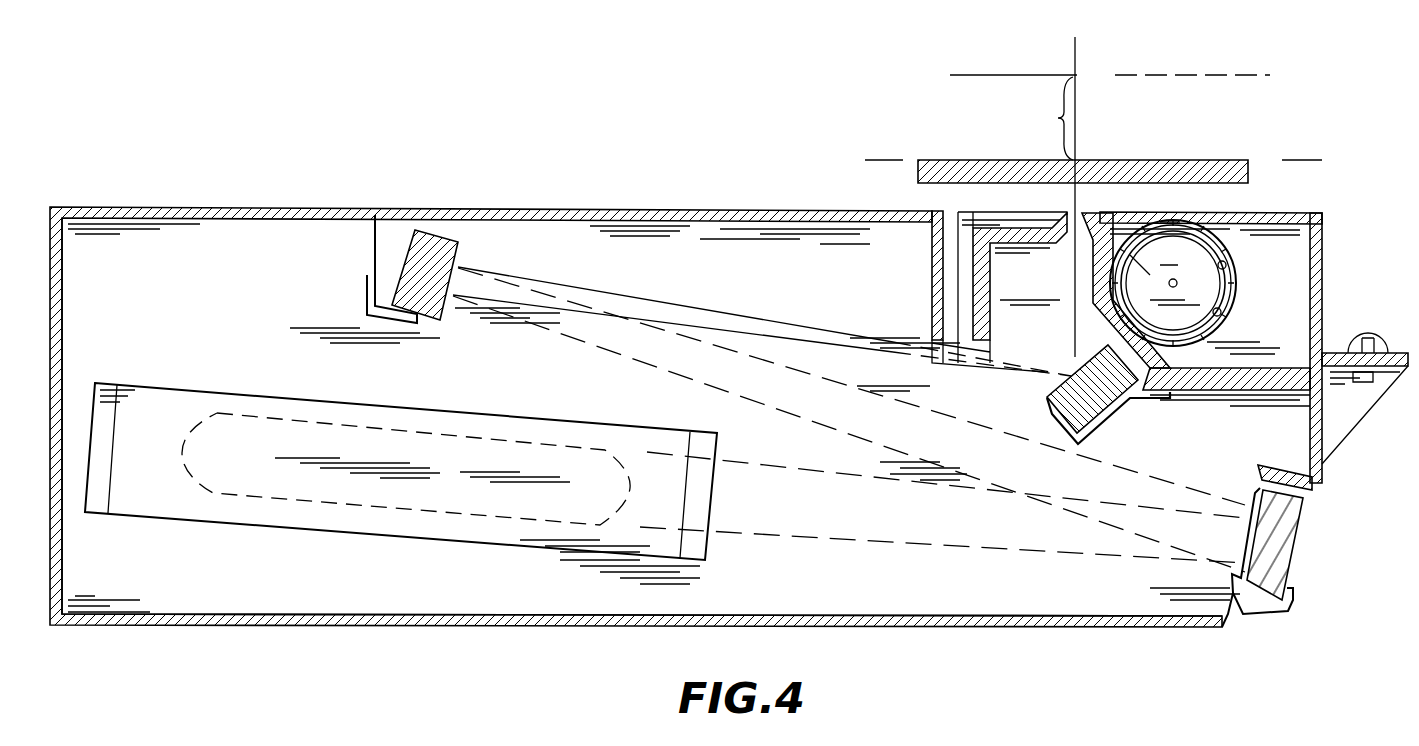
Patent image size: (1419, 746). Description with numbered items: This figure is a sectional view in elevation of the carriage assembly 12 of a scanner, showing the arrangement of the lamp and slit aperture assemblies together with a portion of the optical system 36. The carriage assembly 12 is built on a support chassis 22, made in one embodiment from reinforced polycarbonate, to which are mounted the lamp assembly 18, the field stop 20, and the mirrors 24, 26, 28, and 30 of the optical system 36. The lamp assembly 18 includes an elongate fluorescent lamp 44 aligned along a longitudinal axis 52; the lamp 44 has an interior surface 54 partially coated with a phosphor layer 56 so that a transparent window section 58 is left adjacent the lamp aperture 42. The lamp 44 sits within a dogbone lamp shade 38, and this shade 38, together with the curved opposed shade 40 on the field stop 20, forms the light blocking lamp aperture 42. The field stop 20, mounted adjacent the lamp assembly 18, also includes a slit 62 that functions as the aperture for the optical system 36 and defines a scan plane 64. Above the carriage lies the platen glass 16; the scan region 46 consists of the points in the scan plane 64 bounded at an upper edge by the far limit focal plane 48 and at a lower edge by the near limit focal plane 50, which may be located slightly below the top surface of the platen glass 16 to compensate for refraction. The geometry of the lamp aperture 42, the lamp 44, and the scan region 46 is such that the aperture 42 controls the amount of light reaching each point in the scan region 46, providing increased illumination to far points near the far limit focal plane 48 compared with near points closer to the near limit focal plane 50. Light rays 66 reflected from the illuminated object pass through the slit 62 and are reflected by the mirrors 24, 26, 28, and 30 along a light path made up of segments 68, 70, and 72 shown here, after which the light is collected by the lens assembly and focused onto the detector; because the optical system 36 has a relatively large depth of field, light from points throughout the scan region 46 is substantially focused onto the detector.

The carriage assembly 12 is at (266, 115).
The platen glass 16 is at (1162, 159).
The lamp assembly 18 is at (1330, 272).
The field stop assembly 20 is at (955, 208).
The support chassis 22 is at (315, 207).
The mirror 24 is at (1047, 398).
The mirror 26 is at (462, 262).
The mirror 28 is at (1305, 548).
The mirror 30 is at (328, 397).
The optical system 36 is at (430, 553).
The lamp shade 38 is at (1322, 213).
The opposed shade 40 is at (1097, 213).
The lamp aperture 42 is at (1188, 213).
The lamp 44 is at (1215, 350).
The scan region 46 is at (1045, 118).
The far limit focal plane 48 is at (1270, 75).
The near limit focal plane 50 is at (1290, 160).
The longitudinal axis 52 is at (1178, 286).
The interior surface 54 is at (1232, 270).
The phosphor layer 56 is at (1222, 312).
The transparent window section 58 is at (1147, 240).
The slit 62 is at (1068, 210).
The scan plane 64 is at (1078, 58).
The light rays 66 is at (1073, 291).
The light path segment 68 is at (712, 320).
The light path segment 70 is at (803, 418).
The light path segment 72 is at (870, 542).